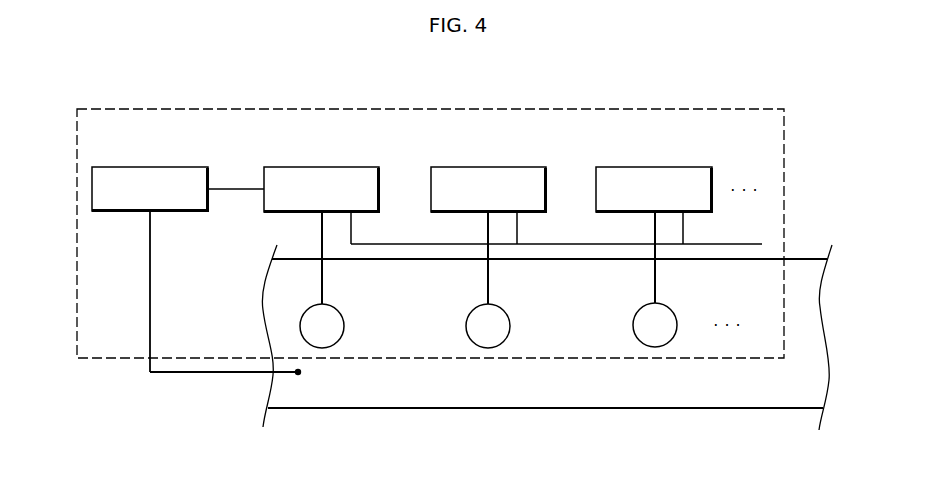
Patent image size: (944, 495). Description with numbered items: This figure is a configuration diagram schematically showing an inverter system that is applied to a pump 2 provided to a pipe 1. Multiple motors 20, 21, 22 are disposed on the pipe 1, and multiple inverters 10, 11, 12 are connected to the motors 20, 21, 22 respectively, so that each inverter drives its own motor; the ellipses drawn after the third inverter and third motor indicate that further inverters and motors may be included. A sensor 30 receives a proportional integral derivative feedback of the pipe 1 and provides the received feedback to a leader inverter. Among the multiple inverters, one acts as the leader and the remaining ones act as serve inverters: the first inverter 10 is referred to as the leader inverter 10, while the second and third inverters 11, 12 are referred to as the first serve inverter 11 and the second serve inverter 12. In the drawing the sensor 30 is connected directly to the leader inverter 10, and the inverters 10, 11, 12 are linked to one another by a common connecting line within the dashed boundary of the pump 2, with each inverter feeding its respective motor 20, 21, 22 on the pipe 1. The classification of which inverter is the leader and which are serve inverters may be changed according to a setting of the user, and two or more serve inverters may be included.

The pipe 1 is at (805, 409).
The pump 2 is at (765, 109).
The leader inverter 10 is at (345, 167).
The first serve inverter 11 is at (512, 167).
The second serve inverter 12 is at (677, 167).
The motor 20 is at (343, 306).
The motor 21 is at (509, 306).
The motor 22 is at (676, 305).
The sensor 30 is at (172, 167).